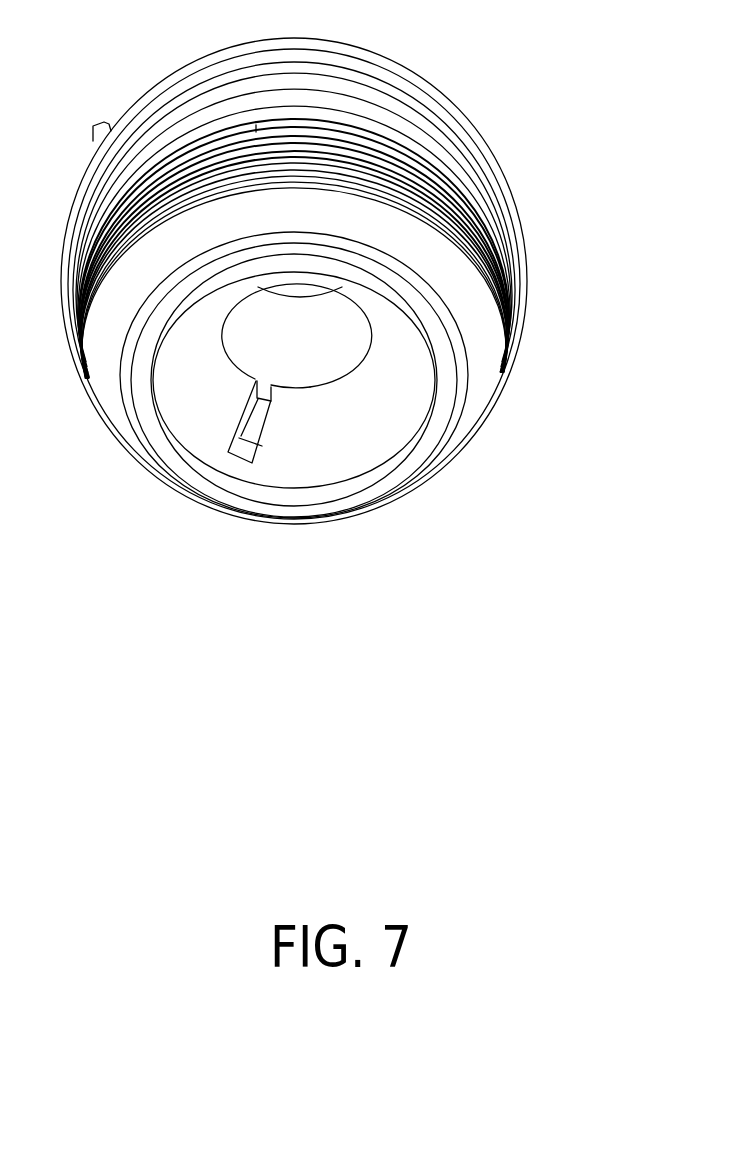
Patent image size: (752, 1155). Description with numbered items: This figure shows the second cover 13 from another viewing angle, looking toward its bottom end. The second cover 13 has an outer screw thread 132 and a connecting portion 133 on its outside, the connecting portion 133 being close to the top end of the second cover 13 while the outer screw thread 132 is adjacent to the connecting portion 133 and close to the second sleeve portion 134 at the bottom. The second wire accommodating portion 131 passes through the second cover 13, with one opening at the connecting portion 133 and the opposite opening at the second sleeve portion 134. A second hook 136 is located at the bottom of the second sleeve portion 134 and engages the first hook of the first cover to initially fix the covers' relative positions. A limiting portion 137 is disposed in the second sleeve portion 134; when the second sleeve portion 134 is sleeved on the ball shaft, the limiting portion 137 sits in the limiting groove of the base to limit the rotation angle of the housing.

The second cover 13 is at (512, 197).
The second wire accommodating portion 131 is at (324, 358).
The outer screw thread 132 is at (515, 268).
The connecting portion 133 is at (477, 133).
The second sleeve portion 134 is at (178, 393).
The second hook 136 is at (463, 400).
The limiting portion 137 is at (247, 450).